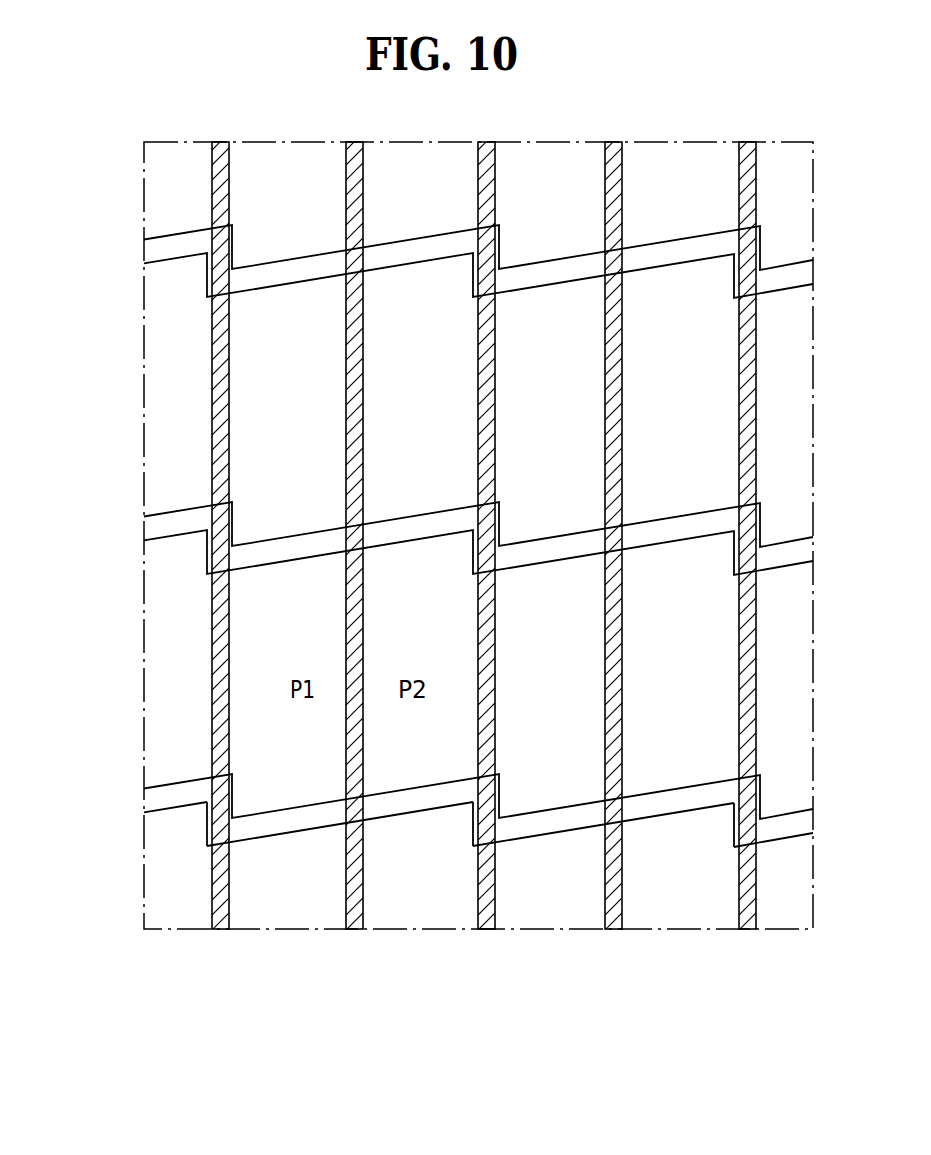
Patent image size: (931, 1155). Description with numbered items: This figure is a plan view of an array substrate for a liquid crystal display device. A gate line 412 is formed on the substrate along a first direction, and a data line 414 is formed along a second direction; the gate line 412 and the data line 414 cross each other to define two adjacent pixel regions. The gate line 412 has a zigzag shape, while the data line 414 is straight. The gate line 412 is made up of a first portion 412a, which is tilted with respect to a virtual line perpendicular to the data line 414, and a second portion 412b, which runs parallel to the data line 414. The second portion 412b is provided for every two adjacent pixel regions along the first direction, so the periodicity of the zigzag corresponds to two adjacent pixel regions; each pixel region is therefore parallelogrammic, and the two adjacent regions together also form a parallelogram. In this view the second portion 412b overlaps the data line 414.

The data line 414 is at (212, 635).
The gate line 412 is at (460, 657).
The first portion 412a is at (290, 835).
The second portion 412b is at (209, 833).